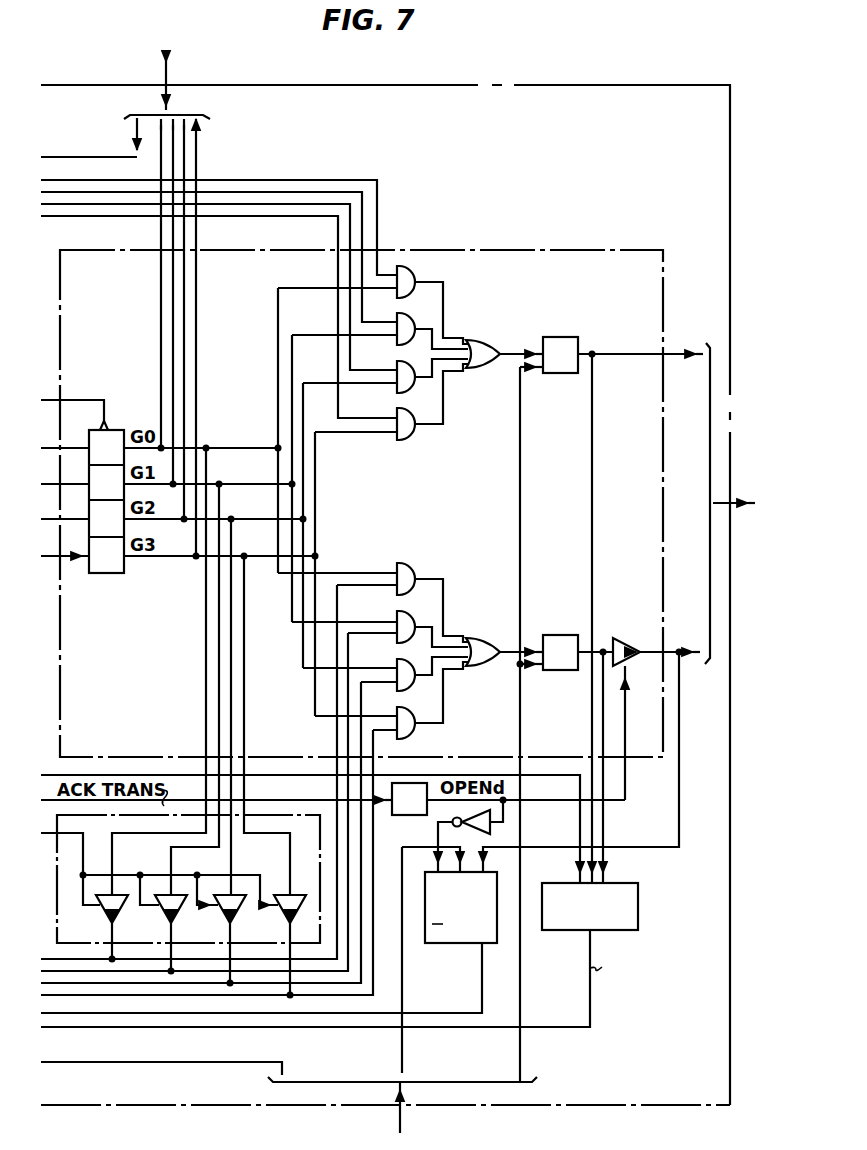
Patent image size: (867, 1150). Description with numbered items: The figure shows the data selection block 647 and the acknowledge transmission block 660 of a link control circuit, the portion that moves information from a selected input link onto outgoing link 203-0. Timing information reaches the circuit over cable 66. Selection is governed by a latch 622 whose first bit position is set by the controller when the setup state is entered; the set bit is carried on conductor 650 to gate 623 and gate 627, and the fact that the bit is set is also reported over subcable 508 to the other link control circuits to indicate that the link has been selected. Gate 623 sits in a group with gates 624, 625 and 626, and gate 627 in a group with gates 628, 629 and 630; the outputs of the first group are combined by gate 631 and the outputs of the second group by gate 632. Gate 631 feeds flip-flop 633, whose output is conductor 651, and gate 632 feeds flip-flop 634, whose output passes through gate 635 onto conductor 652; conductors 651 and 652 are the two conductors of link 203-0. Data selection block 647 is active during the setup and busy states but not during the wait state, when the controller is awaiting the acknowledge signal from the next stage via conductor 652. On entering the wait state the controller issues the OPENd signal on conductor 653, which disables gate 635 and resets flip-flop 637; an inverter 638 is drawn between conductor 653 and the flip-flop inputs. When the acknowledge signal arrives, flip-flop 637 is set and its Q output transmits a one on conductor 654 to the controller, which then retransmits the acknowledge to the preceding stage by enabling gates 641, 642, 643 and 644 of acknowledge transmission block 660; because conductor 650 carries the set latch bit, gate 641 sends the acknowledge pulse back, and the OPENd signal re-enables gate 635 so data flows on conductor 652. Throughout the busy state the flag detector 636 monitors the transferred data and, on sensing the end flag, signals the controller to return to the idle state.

The subcable 508 is at (180, 80).
The data selection block 647 is at (538, 249).
The latch 622 is at (106, 579).
The conductor 650 is at (212, 449).
The gate 623 is at (410, 273).
The AND gate 624 is at (408, 330).
The AND gate 625 is at (407, 389).
The AND gate 626 is at (407, 437).
The gate 627 is at (408, 566).
The AND gate 628 is at (405, 616).
The AND gate 629 is at (406, 689).
The AND gate 630 is at (406, 736).
The gate 631 is at (478, 342).
The gate 632 is at (470, 642).
The flip-flop 633 is at (558, 337).
The flip-flop 634 is at (556, 636).
The gate 635 is at (626, 637).
The flag detector 636 is at (618, 884).
The flip-flop 637 is at (455, 947).
The inverter 638 is at (493, 828).
The gate 641 is at (104, 915).
The gate 642 is at (163, 915).
The gate 643 is at (222, 915).
The gate 644 is at (282, 915).
The conductor 651 is at (619, 354).
The conductor 652 is at (685, 638).
The conductor 653 is at (420, 816).
The conductor 654 is at (480, 988).
The acknowledge transmission block 660 is at (263, 812).
The link 203-0 is at (738, 500).
The cable 66 is at (403, 1128).